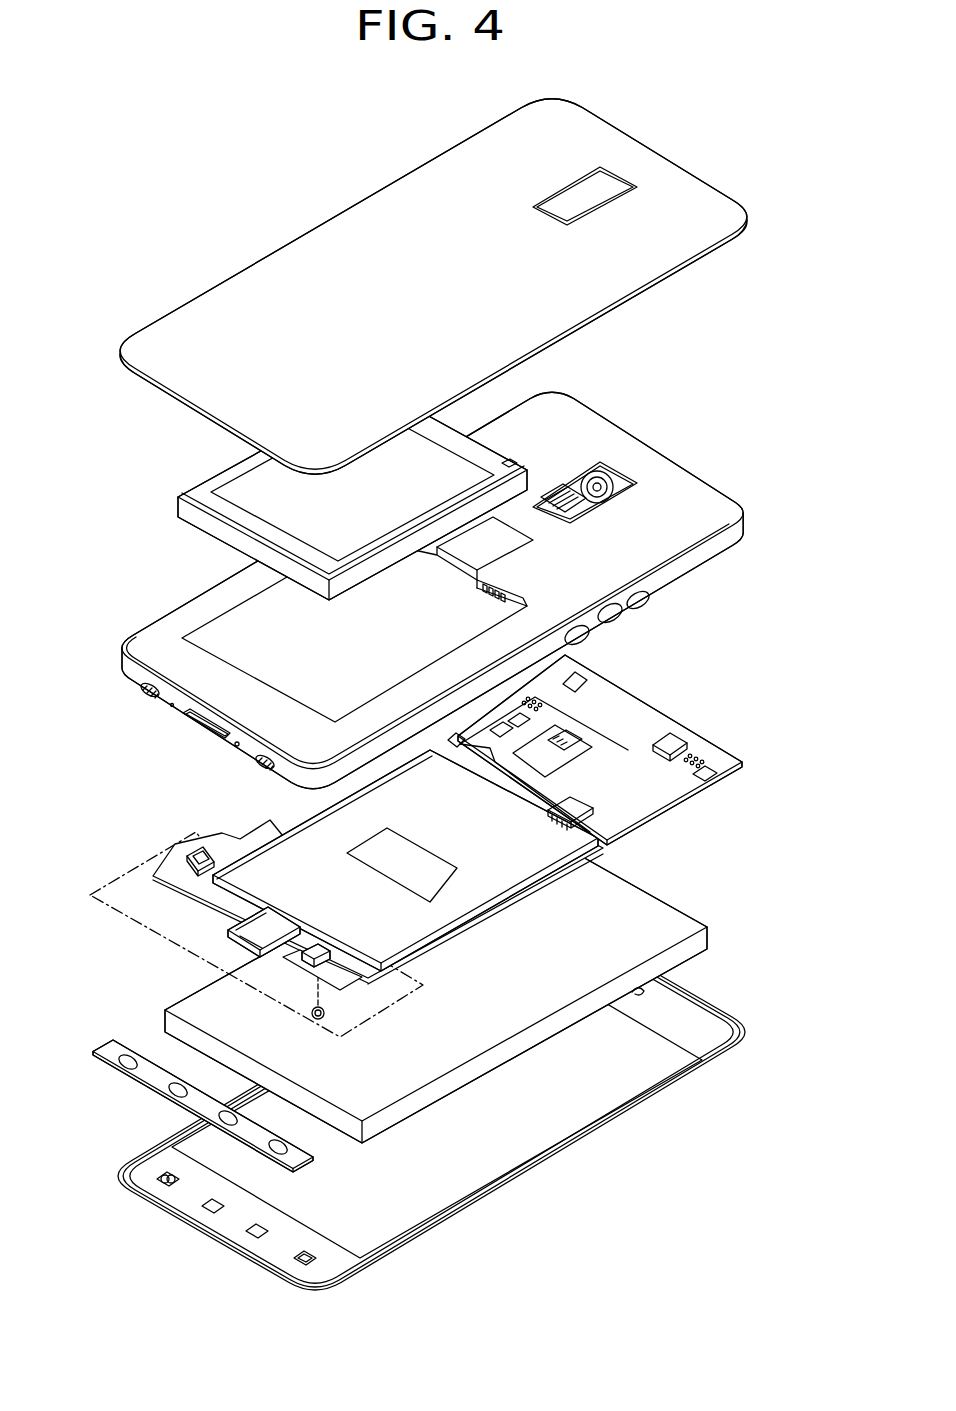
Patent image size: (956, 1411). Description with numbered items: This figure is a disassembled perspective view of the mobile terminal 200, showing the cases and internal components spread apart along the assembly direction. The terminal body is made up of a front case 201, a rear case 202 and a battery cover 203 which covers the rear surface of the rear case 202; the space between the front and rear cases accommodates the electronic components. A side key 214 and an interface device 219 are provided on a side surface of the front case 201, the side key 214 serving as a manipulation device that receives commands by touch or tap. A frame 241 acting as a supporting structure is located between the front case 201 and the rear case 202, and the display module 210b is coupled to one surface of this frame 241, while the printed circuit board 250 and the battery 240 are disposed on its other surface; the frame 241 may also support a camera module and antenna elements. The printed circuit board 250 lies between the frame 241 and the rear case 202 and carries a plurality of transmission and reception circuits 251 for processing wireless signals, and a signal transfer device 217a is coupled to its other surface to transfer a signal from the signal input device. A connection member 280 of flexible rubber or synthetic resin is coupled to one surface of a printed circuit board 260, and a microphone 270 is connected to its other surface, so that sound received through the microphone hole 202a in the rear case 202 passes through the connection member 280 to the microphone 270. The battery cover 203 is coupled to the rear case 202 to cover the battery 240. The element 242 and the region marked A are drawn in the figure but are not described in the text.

The mobile terminal 200 is at (138, 233).
The front case 201 is at (757, 1040).
The rear case 202 is at (472, 590).
The microphone hole 202a is at (233, 745).
The battery cover 203 is at (665, 168).
The display module 210b is at (671, 917).
The side key 214 is at (625, 628).
The signal transfer device 217a is at (137, 1070).
The interface device 219 is at (245, 918).
The battery 240 is at (203, 522).
The frame 241 is at (313, 860).
The battery frame 242 is at (183, 858).
The printed circuit board 250 is at (601, 750).
The transmission and reception circuits 251 is at (680, 738).
The printed circuit board 260 is at (186, 866).
The microphone 270 is at (313, 1011).
The connection member 280 is at (305, 964).
The detail region A is at (97, 893).